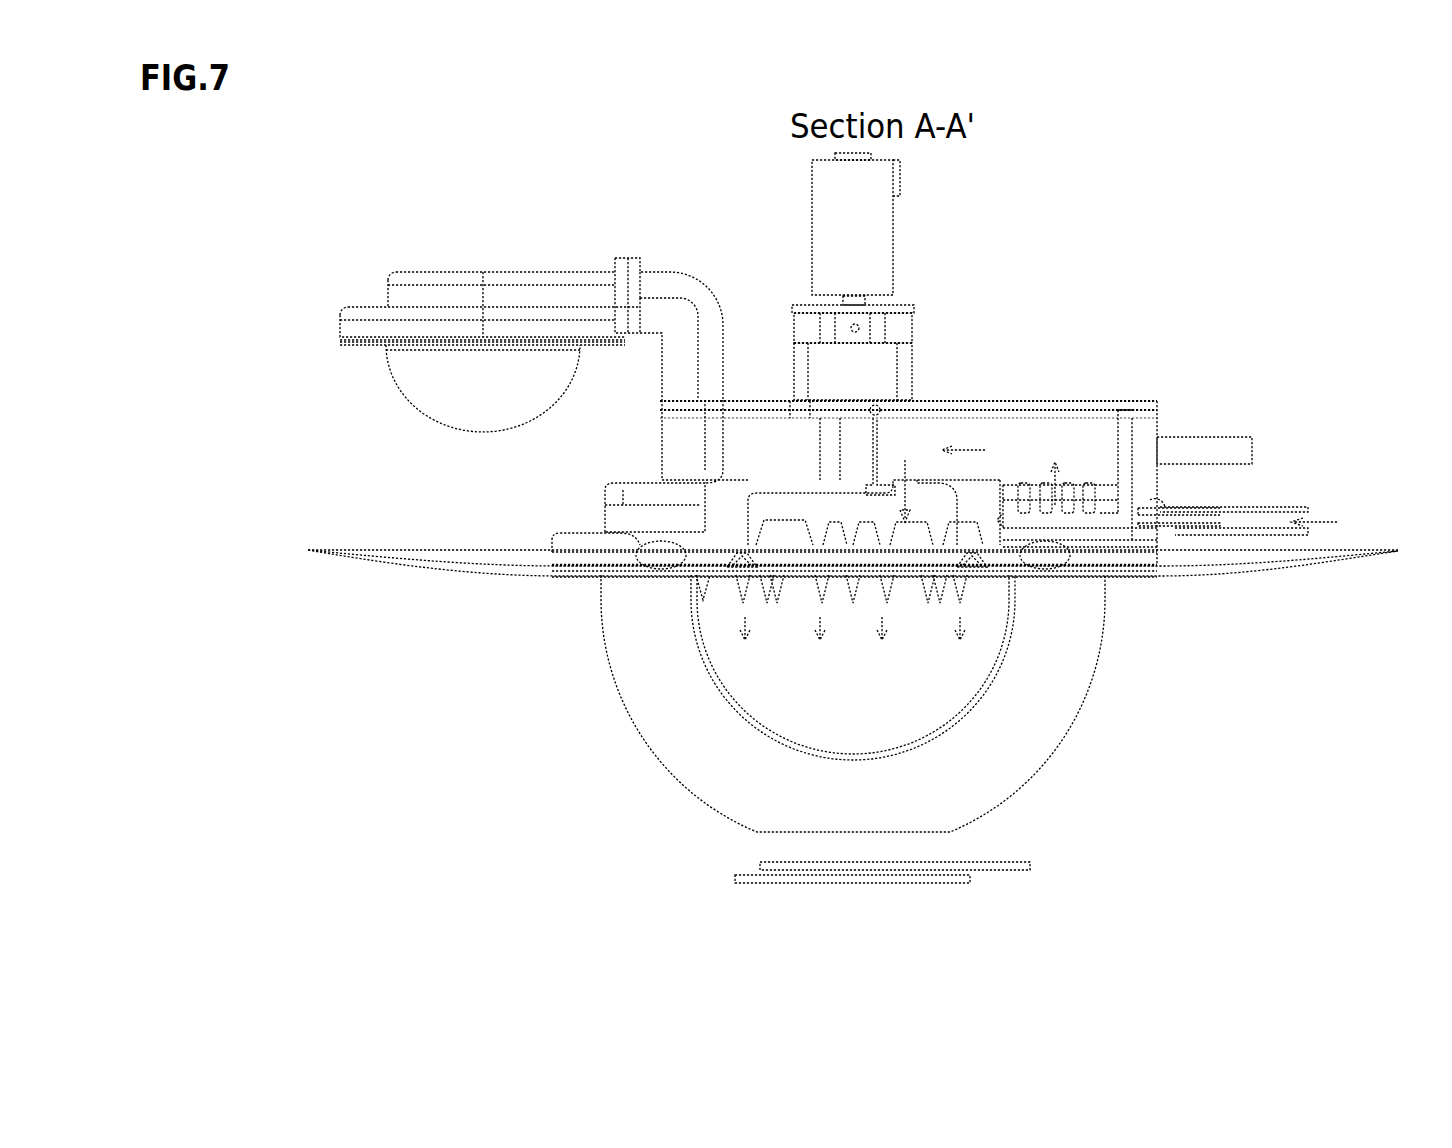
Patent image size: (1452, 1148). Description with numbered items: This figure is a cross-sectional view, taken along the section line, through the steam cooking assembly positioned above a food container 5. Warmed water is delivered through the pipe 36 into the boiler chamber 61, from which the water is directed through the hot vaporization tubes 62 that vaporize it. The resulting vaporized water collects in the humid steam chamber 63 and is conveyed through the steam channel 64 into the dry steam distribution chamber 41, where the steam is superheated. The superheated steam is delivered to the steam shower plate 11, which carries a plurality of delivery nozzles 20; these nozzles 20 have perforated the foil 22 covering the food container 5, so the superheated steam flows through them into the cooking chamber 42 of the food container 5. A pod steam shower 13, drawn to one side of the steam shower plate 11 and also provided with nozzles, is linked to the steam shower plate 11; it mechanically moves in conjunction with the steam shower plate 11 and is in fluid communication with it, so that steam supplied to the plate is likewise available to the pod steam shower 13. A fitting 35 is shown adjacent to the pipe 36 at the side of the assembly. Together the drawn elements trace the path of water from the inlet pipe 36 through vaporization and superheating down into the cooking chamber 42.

The food container 5 is at (1057, 693).
The steam shower plate 11 is at (657, 513).
The pod steam shower 13 is at (435, 293).
The nozzles 20 is at (883, 592).
The foil 22 is at (726, 572).
The connector 35 is at (1238, 442).
The pipe 36 is at (1267, 518).
The dry steam distribution chamber 41 is at (796, 527).
The cooking chamber 42 is at (833, 688).
The boiler chamber 61 is at (1077, 520).
The hot vaporization tubes 62 is at (1102, 497).
The humid steam chamber 63 is at (1018, 440).
The steam channel 64 is at (912, 480).